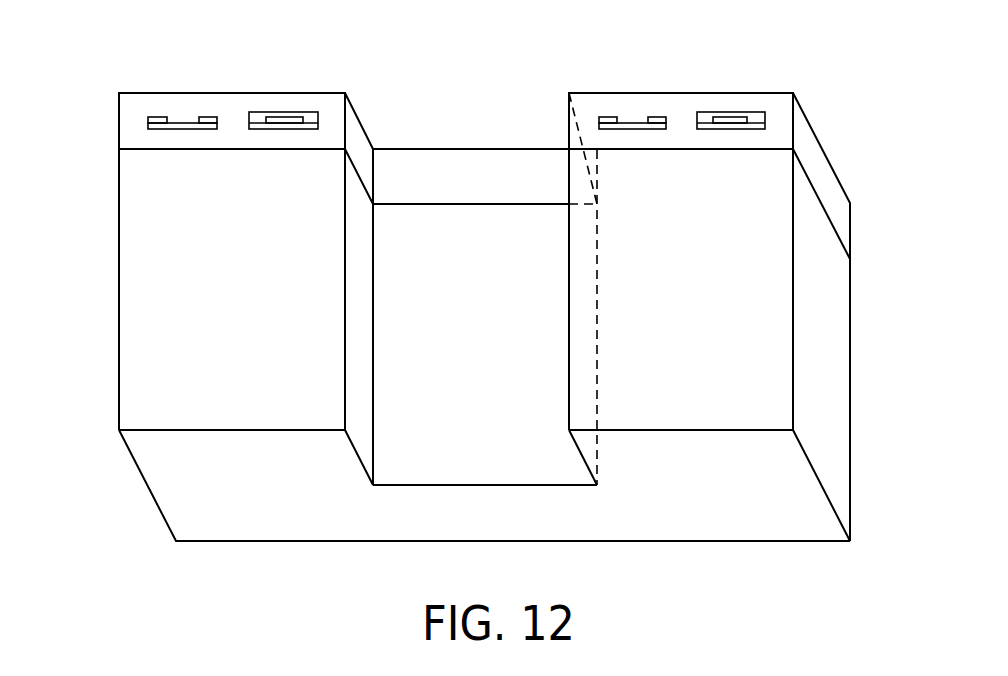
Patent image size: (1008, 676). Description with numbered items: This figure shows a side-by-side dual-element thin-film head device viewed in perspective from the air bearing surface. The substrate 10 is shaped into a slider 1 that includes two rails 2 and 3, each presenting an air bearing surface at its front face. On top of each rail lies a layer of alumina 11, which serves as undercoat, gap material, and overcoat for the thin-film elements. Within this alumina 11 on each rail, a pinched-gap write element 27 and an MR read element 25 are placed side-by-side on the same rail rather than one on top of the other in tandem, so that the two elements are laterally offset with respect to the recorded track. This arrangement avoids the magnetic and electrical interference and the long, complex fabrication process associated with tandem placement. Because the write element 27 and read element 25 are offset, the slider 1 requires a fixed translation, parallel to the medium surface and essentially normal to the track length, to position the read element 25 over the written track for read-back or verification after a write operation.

The slider 1 is at (100, 394).
The rail 2 is at (137, 312).
The rail 3 is at (772, 402).
The substrate 10 is at (148, 197).
The alumina 11 is at (138, 129).
The MR read element 25 is at (187, 117).
The pinched-gap write element 27 is at (280, 112).